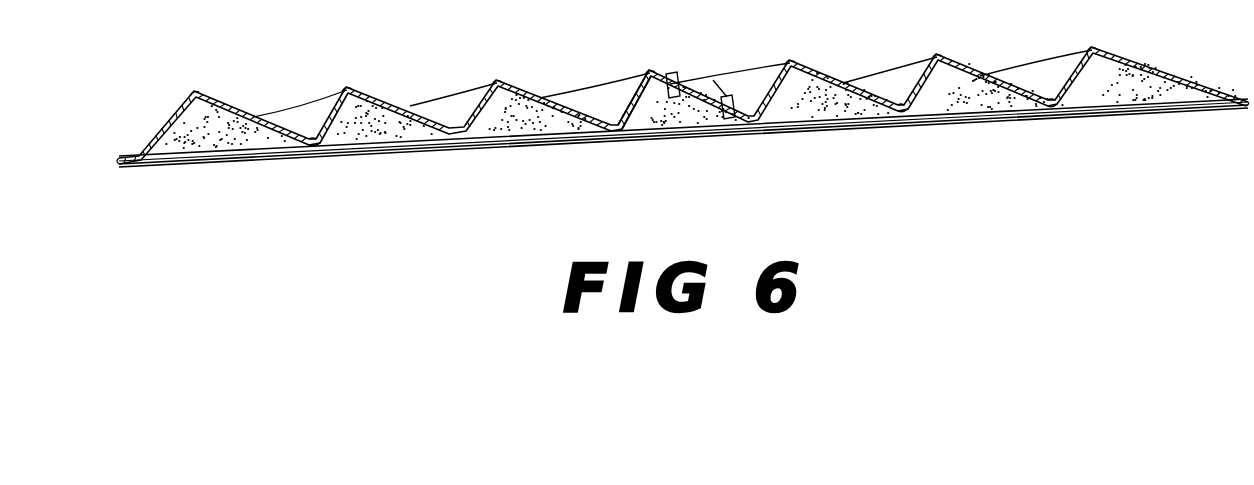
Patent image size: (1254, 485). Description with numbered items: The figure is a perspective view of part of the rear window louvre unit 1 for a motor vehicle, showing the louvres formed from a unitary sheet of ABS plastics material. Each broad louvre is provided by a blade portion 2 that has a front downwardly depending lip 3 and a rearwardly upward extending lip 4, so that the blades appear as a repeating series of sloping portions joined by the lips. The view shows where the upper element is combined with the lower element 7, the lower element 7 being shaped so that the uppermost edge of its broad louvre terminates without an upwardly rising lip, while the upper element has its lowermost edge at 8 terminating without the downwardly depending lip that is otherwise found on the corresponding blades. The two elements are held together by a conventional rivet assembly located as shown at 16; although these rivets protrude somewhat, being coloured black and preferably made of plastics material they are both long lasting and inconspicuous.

The unit 1 is at (667, 135).
The blade portion 2 is at (255, 117).
The front downwardly depending lip 3 is at (495, 82).
The rearwardly upward extending lip 4 is at (318, 144).
The lower element 7 is at (452, 150).
The lowermost edge of the upper element 8 is at (637, 86).
The rivet assembly location 16 is at (676, 80).